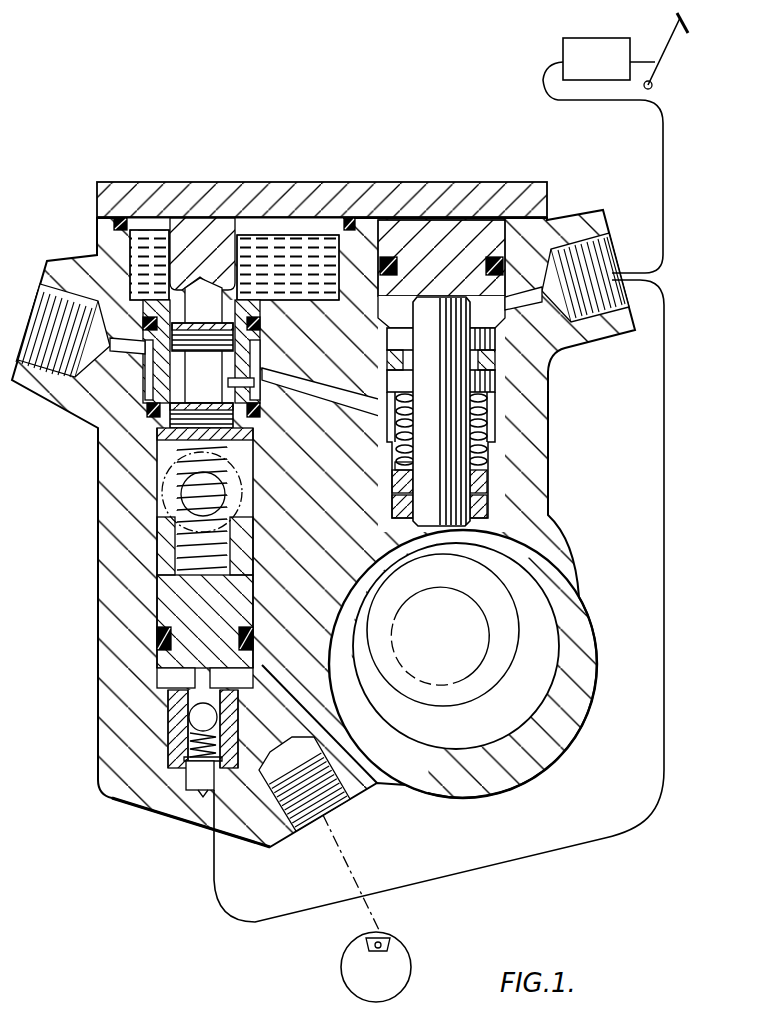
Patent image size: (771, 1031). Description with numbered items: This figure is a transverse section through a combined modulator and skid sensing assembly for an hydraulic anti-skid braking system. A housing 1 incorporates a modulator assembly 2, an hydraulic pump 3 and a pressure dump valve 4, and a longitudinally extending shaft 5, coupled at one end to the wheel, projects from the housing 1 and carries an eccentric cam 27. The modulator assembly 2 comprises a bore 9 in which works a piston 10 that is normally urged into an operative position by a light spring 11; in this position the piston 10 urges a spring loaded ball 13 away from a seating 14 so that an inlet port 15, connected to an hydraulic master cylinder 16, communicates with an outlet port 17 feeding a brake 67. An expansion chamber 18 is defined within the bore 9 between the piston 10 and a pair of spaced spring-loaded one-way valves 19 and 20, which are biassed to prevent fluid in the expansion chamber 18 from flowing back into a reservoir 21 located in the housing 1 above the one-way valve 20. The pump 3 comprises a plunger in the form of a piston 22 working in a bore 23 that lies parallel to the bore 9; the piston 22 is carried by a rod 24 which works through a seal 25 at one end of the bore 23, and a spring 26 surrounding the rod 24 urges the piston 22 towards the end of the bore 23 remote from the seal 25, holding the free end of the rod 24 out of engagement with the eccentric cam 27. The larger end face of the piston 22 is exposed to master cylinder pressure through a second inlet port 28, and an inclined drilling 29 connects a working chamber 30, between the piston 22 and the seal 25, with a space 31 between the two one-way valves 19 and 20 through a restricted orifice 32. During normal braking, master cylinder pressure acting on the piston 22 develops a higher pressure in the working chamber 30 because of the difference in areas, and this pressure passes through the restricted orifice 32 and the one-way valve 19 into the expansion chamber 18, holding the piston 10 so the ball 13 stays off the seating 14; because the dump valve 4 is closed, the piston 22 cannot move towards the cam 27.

The housing 1 is at (383, 772).
The modulator assembly 2 is at (170, 673).
The hydraulic pump 3 is at (440, 483).
The pressure dump valve 4 is at (177, 490).
The shaft 5 is at (468, 662).
The bore 9 is at (158, 567).
The piston 10 is at (165, 601).
The light spring 11 is at (180, 538).
The spring loaded ball 13 is at (175, 748).
The seating 14 is at (173, 690).
The inlet port 15 is at (204, 797).
The hydraulic master cylinder 16 is at (588, 43).
The outlet port 17 is at (323, 800).
The expansion chamber 18 is at (240, 507).
The one-way valve 19 is at (236, 414).
The one-way valve 20 is at (236, 338).
The reservoir 21 is at (138, 267).
The piston 22 is at (503, 390).
The bore 23 is at (500, 418).
The rod 24 is at (507, 540).
The seal 25 is at (491, 515).
The spring 26 is at (491, 453).
The eccentric cam 27 is at (530, 607).
The second inlet port 28 is at (604, 258).
The inclined drilling 29 is at (318, 400).
The working chamber 30 is at (394, 461).
The space 31 is at (147, 398).
The restricted orifice 32 is at (254, 383).
The brake 67 is at (390, 973).